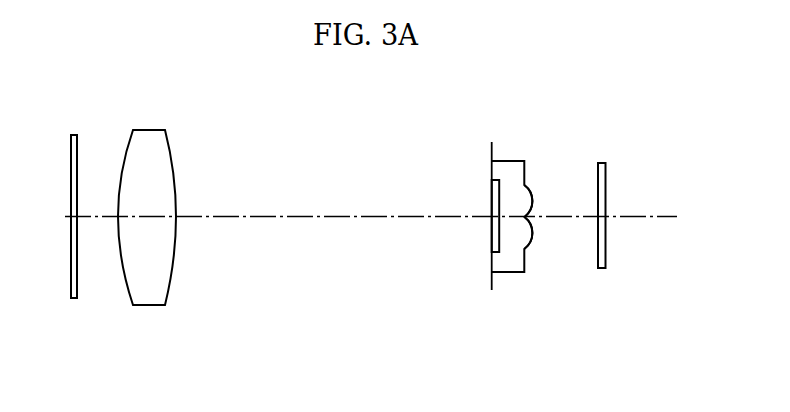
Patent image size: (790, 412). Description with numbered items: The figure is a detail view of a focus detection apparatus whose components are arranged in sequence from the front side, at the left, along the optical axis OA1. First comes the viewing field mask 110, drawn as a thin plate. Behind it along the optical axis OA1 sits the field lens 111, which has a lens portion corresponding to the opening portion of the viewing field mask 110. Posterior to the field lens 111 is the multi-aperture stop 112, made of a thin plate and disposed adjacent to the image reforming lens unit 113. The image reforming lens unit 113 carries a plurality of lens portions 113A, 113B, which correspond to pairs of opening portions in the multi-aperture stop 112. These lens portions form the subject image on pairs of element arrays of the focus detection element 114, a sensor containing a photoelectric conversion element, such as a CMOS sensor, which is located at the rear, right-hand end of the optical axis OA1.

The optical axis OA1 is at (307, 215).
The viewing field mask 110 is at (78, 288).
The field lens 111 is at (168, 292).
The multi-aperture stop 112 is at (490, 153).
The image reforming lens unit 113 is at (527, 265).
The lens portion 113A is at (533, 192).
The lens portion 113B is at (533, 235).
The focus detection element 114 is at (608, 262).